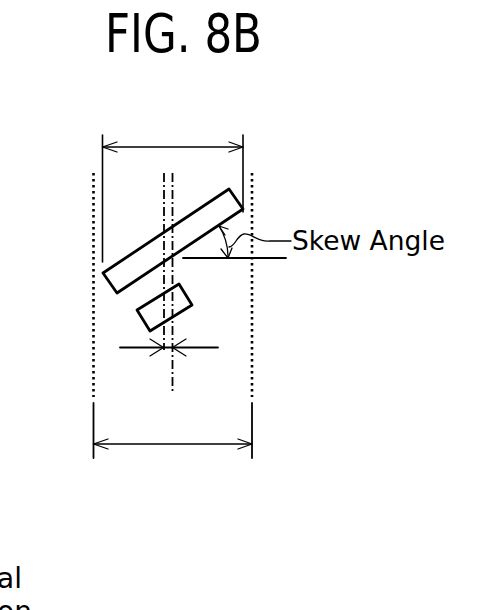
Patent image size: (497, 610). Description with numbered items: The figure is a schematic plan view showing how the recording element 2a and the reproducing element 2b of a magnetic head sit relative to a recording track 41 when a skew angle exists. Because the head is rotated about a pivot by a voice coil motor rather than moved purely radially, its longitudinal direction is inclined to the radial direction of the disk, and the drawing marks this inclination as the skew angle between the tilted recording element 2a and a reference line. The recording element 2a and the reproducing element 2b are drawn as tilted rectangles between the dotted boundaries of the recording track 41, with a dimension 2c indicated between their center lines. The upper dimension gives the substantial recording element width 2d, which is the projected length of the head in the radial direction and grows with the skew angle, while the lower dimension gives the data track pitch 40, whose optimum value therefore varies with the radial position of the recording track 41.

The recording element 2a is at (237, 218).
The reproducing element 2b is at (138, 312).
The offset between element centers 2c is at (173, 349).
The substantial recording element width 2d is at (172, 147).
The data track pitch 40 is at (160, 445).
The recording track 41 is at (233, 326).